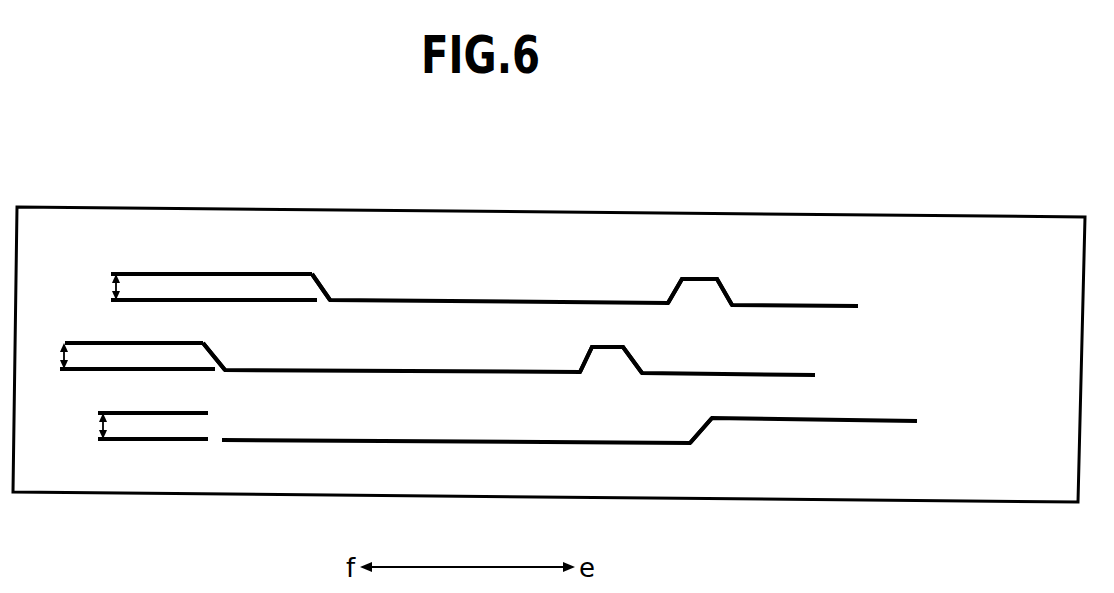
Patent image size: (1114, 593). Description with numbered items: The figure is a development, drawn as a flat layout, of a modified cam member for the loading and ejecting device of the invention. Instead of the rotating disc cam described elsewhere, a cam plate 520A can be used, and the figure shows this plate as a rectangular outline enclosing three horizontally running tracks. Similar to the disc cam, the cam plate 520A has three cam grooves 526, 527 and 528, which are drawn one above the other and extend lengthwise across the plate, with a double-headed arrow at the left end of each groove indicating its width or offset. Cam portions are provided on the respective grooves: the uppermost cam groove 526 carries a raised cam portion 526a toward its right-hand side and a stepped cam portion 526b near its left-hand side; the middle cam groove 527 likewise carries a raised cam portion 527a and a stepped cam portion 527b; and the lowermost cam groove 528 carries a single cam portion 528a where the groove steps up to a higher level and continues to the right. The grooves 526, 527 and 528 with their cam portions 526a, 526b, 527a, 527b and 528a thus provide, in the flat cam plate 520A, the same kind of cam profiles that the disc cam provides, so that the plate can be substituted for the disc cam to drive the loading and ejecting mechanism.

The cam plate 520A is at (857, 214).
The cam groove 526 is at (445, 300).
The cam portion 526a is at (700, 279).
The cam portion 526b is at (320, 284).
The cam groove 527 is at (437, 371).
The cam portion 527a is at (610, 347).
The cam portion 527b is at (216, 357).
The cam groove 528 is at (465, 441).
The cam portion 528a is at (700, 432).